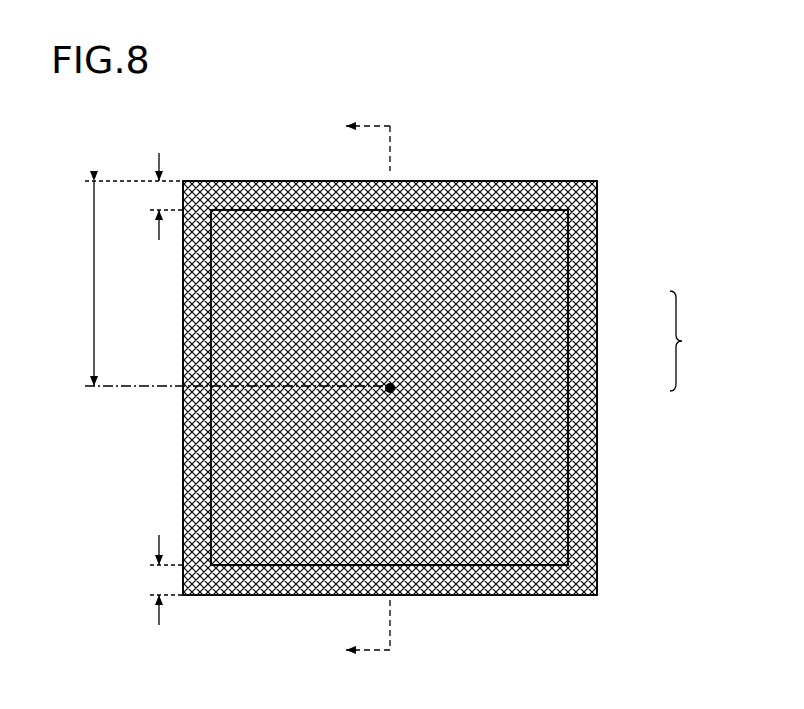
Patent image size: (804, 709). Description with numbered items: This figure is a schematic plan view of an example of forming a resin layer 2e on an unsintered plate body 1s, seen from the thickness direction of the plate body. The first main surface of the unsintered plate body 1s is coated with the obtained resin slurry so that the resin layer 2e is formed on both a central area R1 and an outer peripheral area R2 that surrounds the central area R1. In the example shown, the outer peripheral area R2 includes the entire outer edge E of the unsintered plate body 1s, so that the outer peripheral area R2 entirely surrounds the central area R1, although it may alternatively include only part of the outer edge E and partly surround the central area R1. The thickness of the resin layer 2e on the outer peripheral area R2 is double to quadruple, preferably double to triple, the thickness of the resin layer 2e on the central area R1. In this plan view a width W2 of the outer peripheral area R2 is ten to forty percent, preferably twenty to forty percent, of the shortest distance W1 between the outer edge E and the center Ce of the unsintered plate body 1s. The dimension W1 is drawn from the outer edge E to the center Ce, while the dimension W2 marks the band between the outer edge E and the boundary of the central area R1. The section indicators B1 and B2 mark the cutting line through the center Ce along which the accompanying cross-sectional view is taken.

The outer edge E is at (460, 173).
The central area R1 is at (545, 319).
The outer peripheral area R2 is at (583, 373).
The unsintered plate body 1s is at (695, 341).
The resin layer 2e is at (465, 540).
The center Ce is at (414, 386).
The shortest distance W1 is at (220, 283).
The width W2 is at (146, 389).
The section line B1 is at (387, 644).
The section line B2 is at (385, 129).